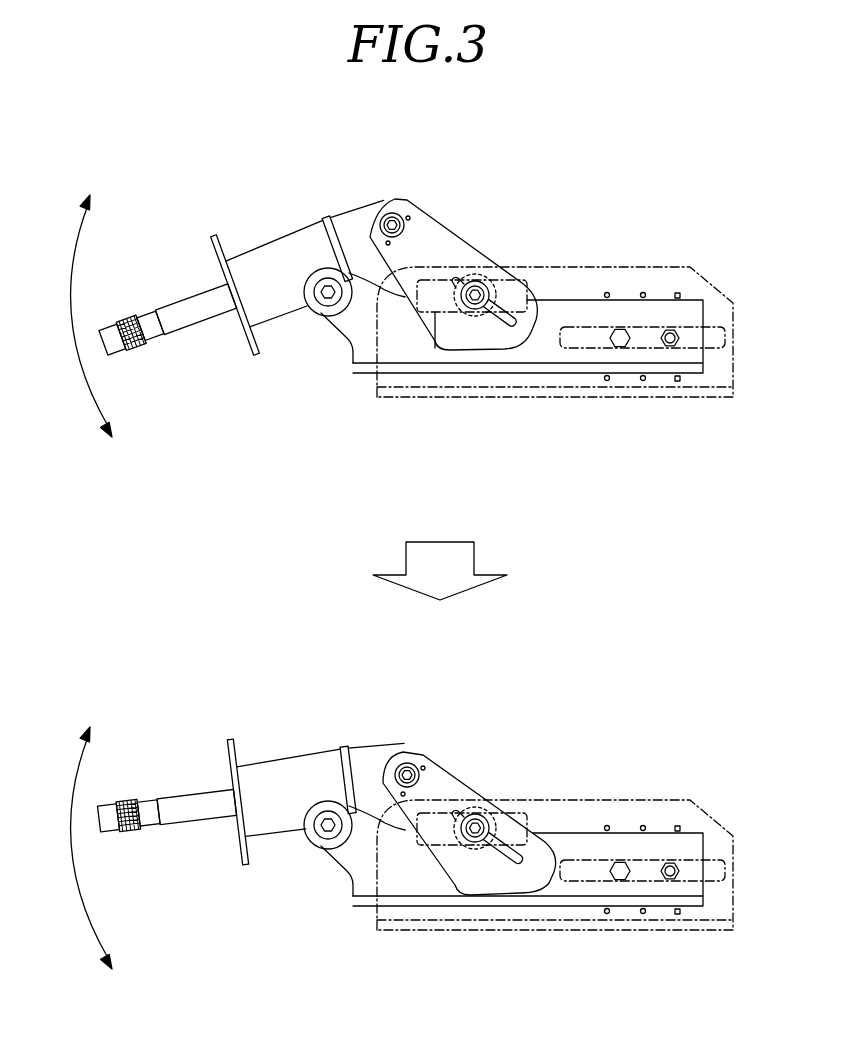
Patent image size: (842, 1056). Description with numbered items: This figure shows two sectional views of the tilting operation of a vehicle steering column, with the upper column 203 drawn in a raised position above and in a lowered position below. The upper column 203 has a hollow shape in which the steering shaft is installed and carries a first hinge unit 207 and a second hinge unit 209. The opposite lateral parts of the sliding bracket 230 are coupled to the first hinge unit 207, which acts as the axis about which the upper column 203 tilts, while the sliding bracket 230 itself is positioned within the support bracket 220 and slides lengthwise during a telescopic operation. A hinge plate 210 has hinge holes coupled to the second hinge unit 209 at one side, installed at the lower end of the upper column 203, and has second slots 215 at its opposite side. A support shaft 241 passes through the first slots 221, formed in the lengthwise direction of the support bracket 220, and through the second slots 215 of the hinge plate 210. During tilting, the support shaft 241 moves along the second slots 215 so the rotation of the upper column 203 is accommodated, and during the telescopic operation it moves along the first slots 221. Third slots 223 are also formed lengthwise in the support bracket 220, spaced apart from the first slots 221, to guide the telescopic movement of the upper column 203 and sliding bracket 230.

The upper column 203 is at (277, 252).
The first hinge unit 207 is at (327, 297).
The second hinge unit 209 is at (396, 214).
The hinge plate 210 is at (437, 238).
The second slots 215 is at (500, 322).
The support bracket 220 is at (627, 397).
The first slots 221 is at (432, 330).
The third slots 223 is at (590, 350).
The sliding bracket 230 is at (342, 325).
The support shaft 241 is at (477, 288).